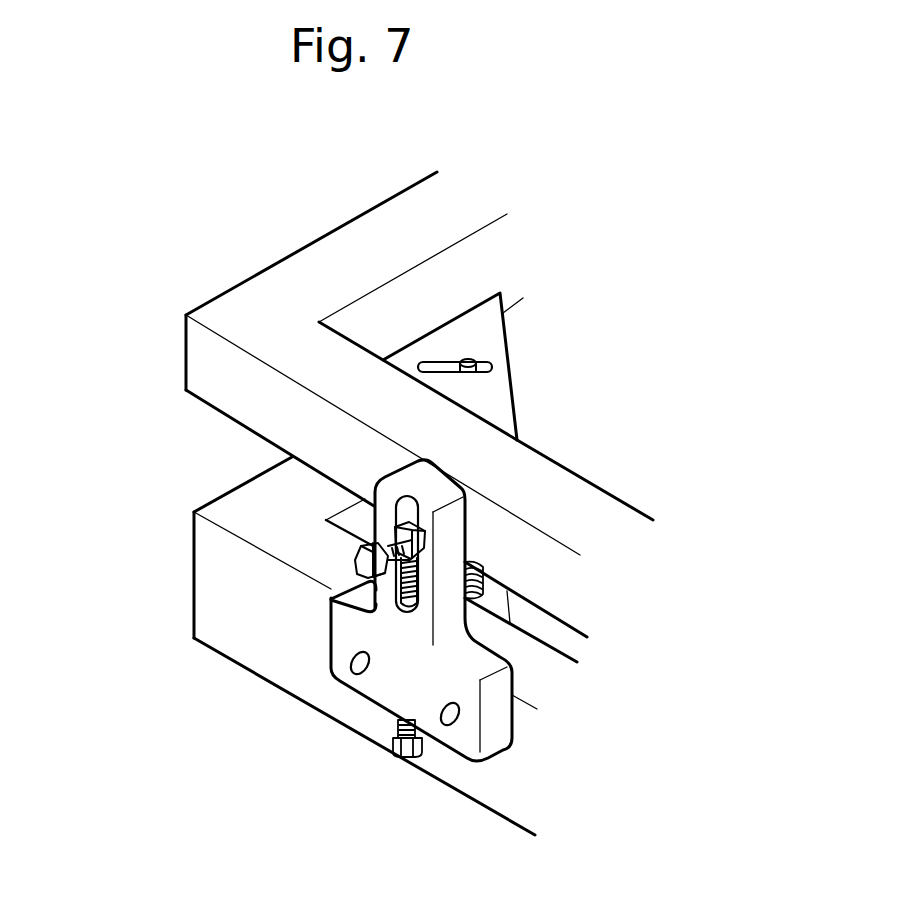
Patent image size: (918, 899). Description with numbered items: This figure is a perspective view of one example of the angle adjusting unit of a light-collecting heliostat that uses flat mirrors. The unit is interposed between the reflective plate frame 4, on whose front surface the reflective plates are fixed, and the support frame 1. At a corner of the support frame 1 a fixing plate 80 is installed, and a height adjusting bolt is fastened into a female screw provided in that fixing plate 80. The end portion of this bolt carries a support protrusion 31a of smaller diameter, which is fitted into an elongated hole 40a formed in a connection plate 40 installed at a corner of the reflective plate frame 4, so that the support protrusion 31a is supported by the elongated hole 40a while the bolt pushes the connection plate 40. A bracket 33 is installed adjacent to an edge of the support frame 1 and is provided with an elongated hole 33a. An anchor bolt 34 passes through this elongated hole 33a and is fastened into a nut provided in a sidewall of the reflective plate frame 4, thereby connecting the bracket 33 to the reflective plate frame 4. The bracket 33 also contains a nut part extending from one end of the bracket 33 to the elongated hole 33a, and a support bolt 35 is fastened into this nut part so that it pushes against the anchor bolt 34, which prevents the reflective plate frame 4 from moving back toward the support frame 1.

The support frame 1 is at (478, 792).
The reflective plate frame 4 is at (205, 363).
The support protrusion 31a is at (468, 360).
The bracket 33 is at (500, 722).
The elongated hole 33a is at (397, 508).
The anchor bolt 34 is at (367, 562).
The support bolt 35 is at (400, 592).
The connection plate 40 is at (499, 402).
The elongated hole 40a is at (426, 363).
The fixing plate 80 is at (502, 608).